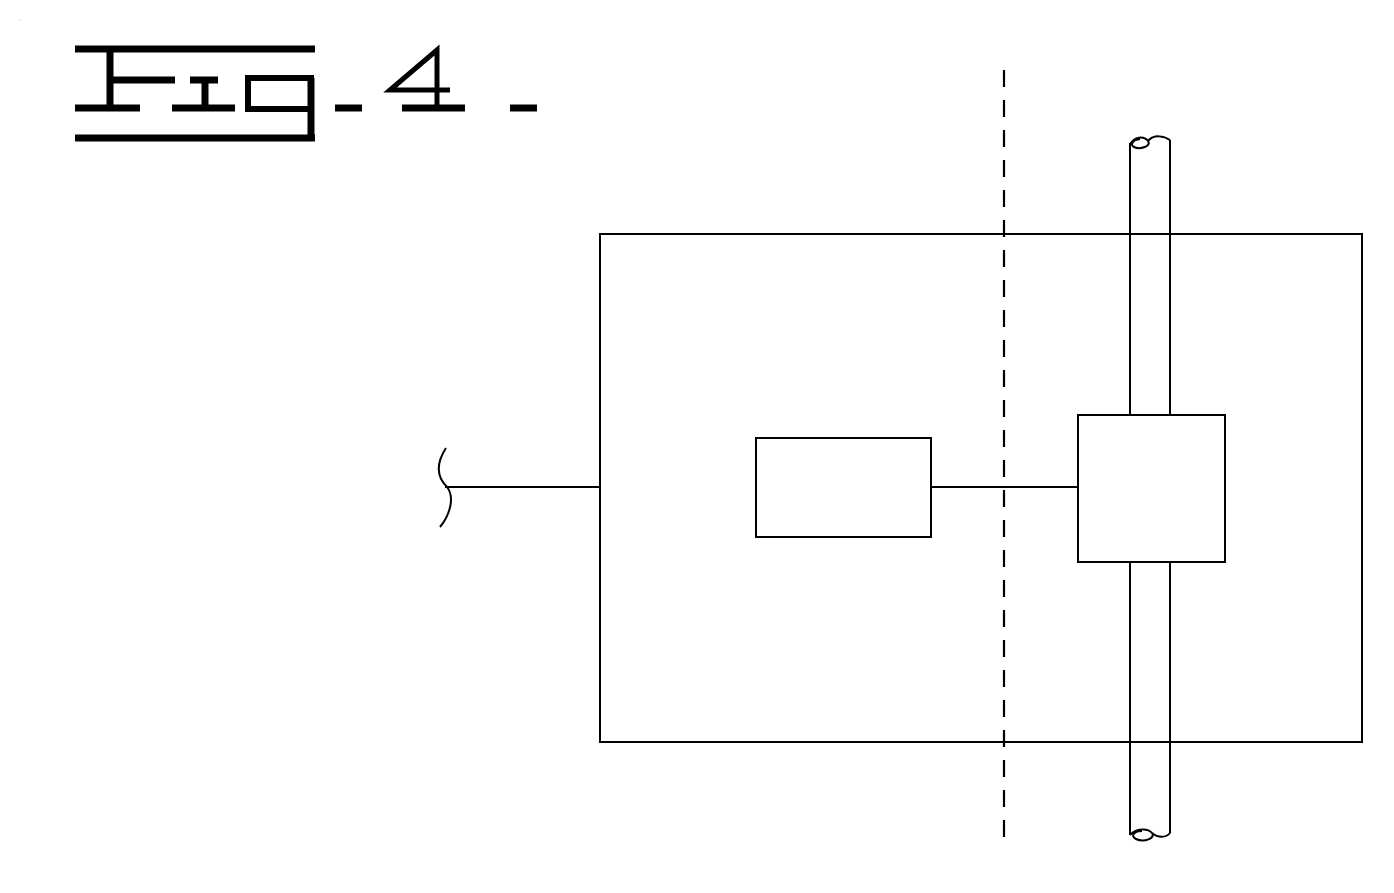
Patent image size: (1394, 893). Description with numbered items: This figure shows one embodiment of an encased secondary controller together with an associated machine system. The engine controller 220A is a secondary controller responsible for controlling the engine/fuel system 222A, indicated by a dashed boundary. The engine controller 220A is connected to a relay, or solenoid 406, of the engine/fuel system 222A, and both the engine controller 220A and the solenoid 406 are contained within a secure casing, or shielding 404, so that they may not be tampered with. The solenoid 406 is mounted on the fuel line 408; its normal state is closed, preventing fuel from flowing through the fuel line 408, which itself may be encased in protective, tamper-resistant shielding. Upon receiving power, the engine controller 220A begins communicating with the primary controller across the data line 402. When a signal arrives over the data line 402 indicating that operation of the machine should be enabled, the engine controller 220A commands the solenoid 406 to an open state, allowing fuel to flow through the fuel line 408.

The data line 402 is at (511, 487).
The secure casing or shielding 404 is at (709, 234).
The engine controller 220A is at (838, 438).
The engine/fuel system 222A is at (1003, 140).
The solenoid 406 is at (1207, 415).
The fuel line 408 is at (1172, 797).